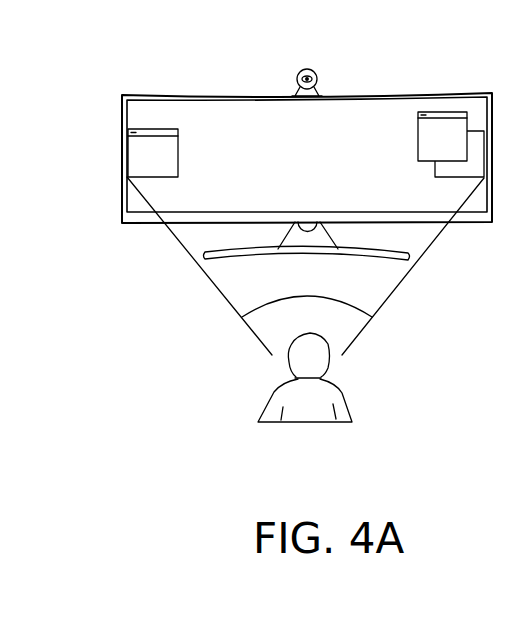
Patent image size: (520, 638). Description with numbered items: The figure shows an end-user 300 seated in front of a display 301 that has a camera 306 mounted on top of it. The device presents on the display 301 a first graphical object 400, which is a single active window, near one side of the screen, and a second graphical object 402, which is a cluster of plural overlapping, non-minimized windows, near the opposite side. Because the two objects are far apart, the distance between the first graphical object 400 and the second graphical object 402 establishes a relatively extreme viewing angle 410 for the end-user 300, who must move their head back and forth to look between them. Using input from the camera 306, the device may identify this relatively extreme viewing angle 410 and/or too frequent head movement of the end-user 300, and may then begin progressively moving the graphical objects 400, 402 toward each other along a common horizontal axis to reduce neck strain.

The end-user 300 is at (345, 399).
The display 301 is at (373, 106).
The camera 306 is at (301, 70).
The first graphical object 400 is at (137, 162).
The second graphical object 402 is at (454, 139).
The viewing angle 410 is at (300, 296).